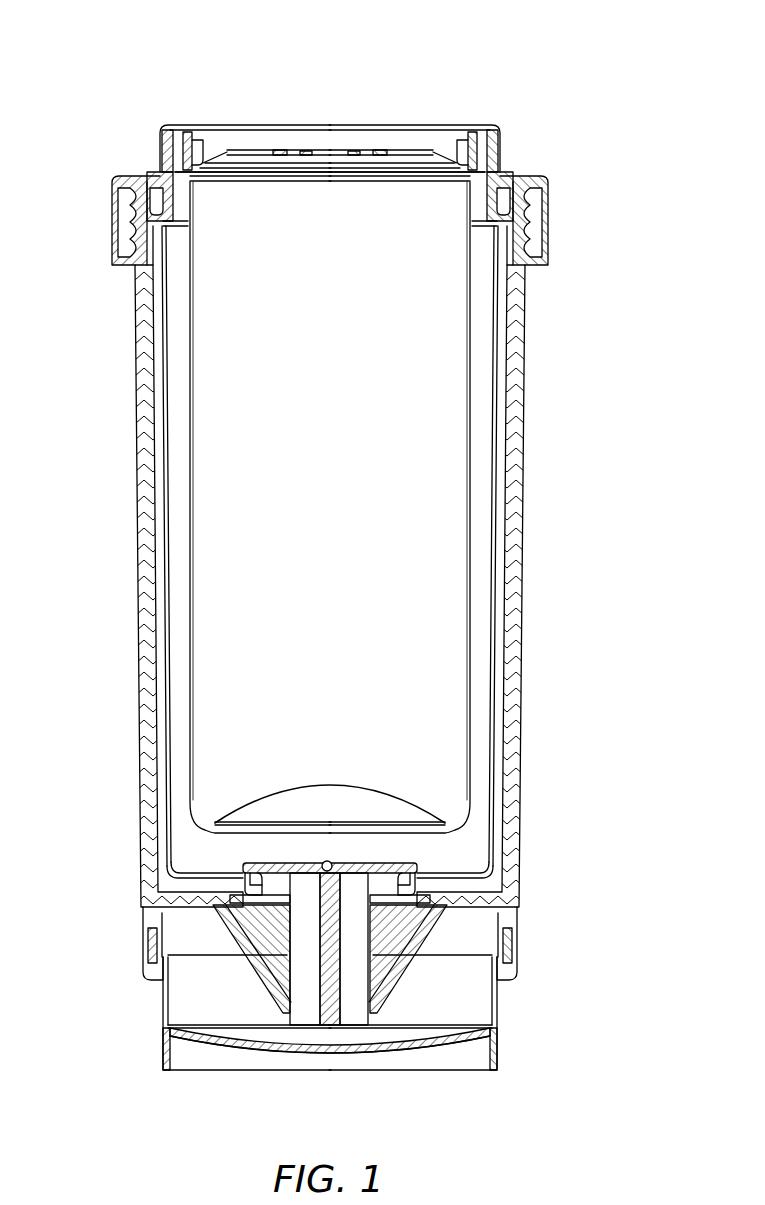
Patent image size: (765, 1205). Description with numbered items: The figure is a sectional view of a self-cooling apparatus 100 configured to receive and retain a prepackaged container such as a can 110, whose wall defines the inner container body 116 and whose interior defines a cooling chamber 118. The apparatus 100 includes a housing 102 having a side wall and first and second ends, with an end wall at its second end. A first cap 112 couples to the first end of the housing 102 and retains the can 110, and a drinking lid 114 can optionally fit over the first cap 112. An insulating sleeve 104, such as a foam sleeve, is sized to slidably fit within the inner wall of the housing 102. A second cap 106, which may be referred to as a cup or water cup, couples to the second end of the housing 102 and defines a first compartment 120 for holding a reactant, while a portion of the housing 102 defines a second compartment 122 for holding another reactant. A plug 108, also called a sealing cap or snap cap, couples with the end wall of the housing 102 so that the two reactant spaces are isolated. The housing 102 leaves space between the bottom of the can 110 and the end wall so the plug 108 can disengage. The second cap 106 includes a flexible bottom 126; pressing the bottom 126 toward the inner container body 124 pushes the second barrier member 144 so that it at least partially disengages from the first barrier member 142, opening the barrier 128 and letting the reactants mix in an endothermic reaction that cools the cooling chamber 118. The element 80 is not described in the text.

The self-cooling apparatus 100 is at (103, 100).
The housing 102 is at (321, 576).
The insulating sleeve 104 is at (495, 688).
The second cap 106 is at (330, 1045).
The plug 108 is at (327, 858).
The can 110 is at (347, 515).
The first cap 112 is at (498, 160).
The drinking lid 114 is at (523, 182).
The inner container body 116 is at (150, 340).
The cooling chamber 118 is at (217, 458).
The first compartment 120 is at (190, 980).
The second compartment 122 is at (443, 1013).
The inner container body 124 is at (331, 502).
The flexible bottom 126 is at (322, 1053).
The barrier 128 is at (472, 873).
The first barrier member 142 is at (180, 882).
The second barrier member 144 is at (470, 862).
The wedge member 80 is at (424, 974).